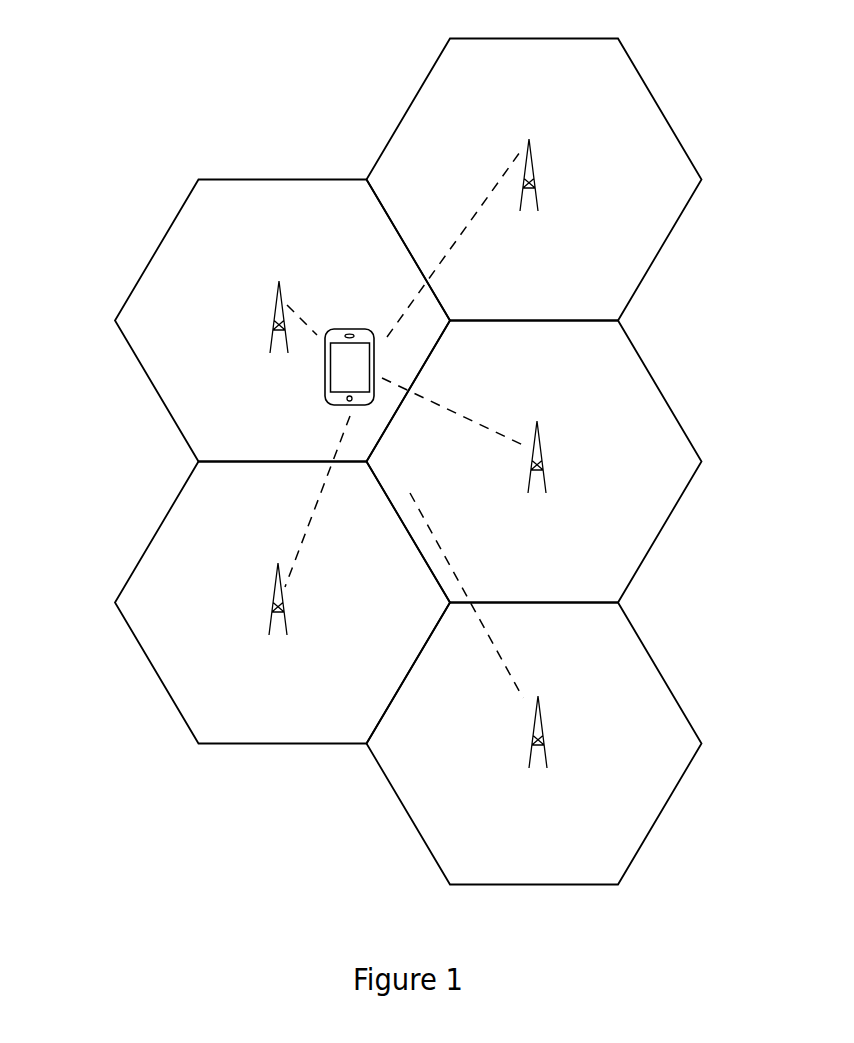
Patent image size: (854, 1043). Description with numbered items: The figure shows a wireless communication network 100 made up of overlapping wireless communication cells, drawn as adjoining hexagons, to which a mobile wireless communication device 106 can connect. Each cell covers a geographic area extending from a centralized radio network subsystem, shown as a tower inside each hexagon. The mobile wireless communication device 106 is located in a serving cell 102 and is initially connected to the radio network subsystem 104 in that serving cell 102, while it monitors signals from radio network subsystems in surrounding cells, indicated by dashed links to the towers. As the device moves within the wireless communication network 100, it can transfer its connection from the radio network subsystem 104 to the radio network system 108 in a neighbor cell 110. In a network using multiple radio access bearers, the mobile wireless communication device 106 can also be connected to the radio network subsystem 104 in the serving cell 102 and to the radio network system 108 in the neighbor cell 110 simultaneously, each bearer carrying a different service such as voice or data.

The wireless communication network 100 is at (104, 69).
The serving cell 102 is at (180, 210).
The radio network subsystem 104 is at (290, 297).
The mobile wireless communication device 106 is at (325, 368).
The radio network system 108 is at (545, 440).
The neighbor cell 110 is at (647, 368).